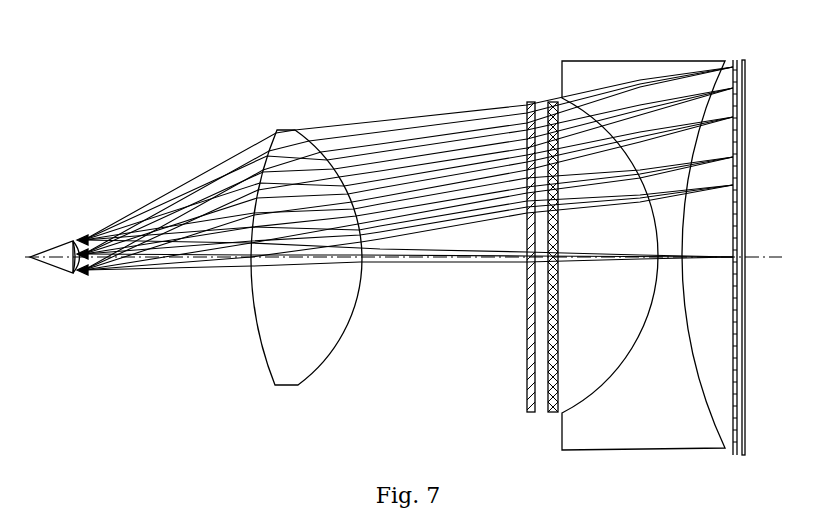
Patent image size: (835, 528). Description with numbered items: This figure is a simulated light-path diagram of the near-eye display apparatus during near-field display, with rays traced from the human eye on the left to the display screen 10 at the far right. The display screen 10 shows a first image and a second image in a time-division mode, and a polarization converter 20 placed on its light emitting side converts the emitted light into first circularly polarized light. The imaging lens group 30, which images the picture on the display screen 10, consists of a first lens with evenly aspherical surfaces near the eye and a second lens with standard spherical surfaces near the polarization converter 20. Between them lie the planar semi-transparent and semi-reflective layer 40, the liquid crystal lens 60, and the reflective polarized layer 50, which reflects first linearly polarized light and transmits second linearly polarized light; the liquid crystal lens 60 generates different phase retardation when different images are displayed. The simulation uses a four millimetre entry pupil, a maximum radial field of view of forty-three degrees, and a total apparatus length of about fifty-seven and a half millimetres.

The display screen 10 is at (744, 62).
The polarization converter 20 is at (735, 59).
The imaging lens group 30 is at (284, 129).
The semi-transparent and semi-reflective layer 40 is at (553, 101).
The reflective polarized layer 50 is at (530, 101).
The liquid crystal lens 60 is at (544, 101).